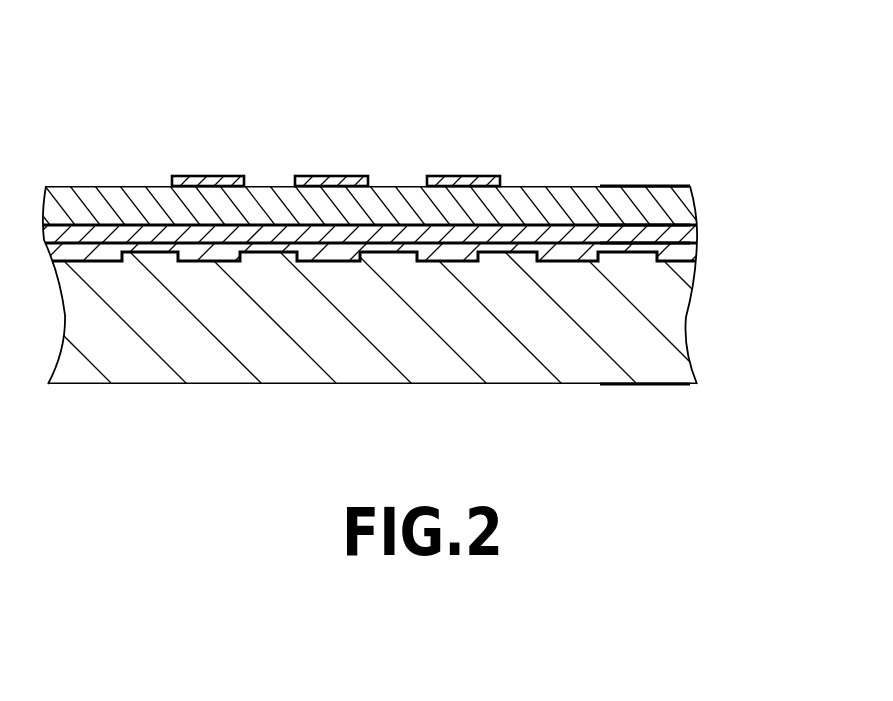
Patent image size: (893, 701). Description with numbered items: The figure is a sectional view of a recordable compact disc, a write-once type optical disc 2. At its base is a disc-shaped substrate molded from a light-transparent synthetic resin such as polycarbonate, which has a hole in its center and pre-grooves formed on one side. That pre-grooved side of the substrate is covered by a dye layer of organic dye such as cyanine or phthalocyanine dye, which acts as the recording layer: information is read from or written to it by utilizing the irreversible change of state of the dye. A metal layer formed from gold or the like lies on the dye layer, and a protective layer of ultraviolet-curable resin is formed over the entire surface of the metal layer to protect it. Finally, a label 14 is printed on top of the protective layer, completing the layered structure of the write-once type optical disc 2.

The write-once type optical disc 2 is at (399, 200).
The label 14 is at (455, 175).